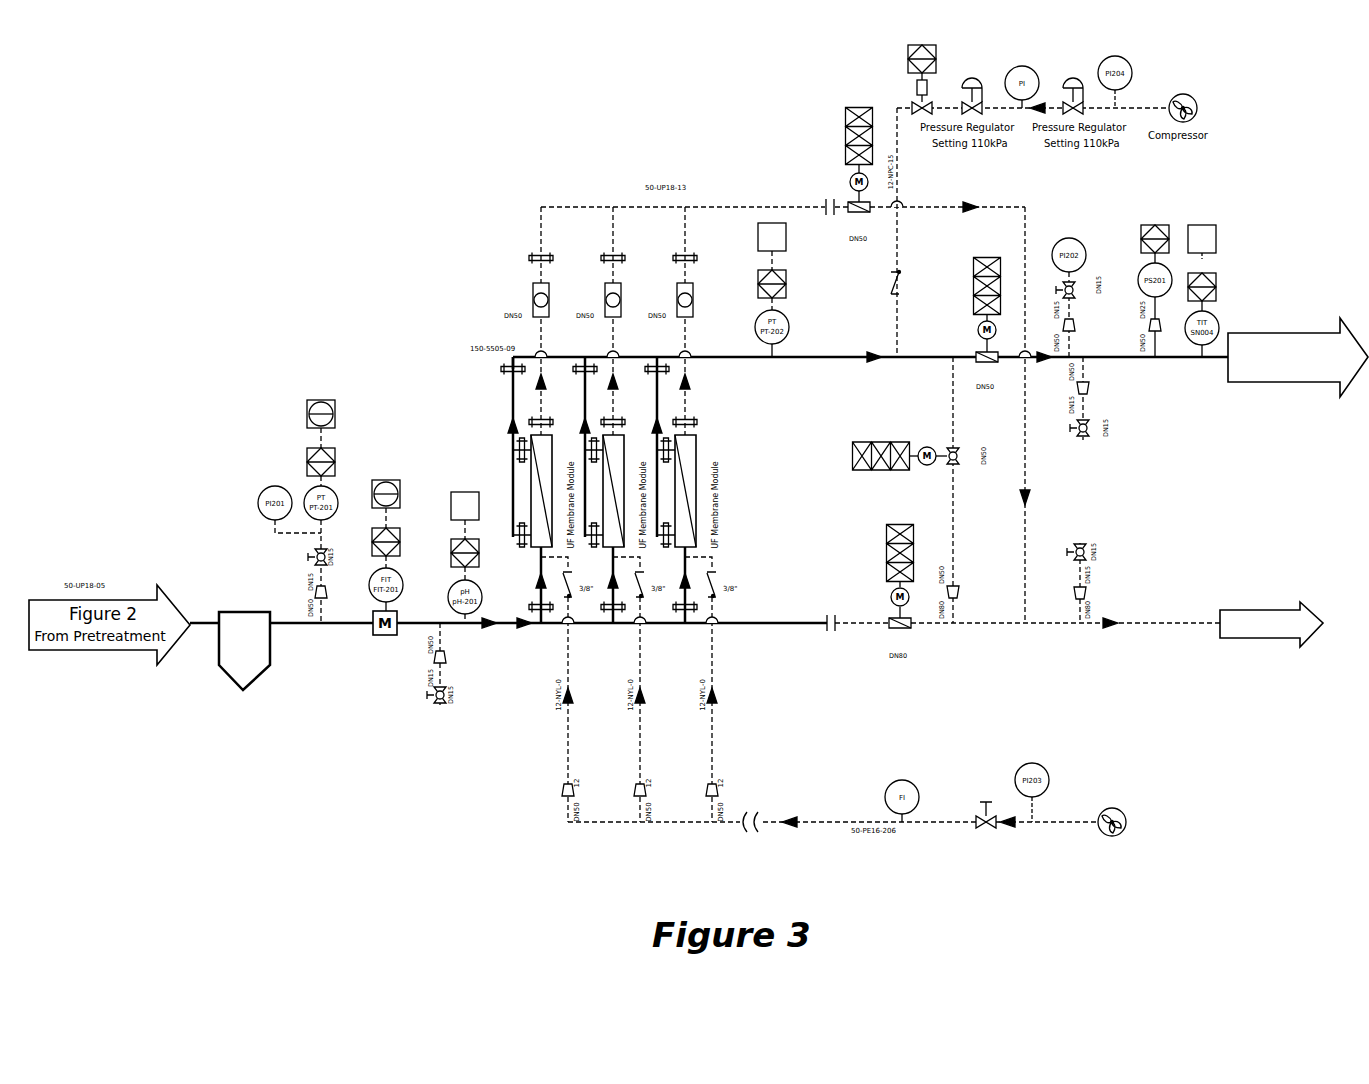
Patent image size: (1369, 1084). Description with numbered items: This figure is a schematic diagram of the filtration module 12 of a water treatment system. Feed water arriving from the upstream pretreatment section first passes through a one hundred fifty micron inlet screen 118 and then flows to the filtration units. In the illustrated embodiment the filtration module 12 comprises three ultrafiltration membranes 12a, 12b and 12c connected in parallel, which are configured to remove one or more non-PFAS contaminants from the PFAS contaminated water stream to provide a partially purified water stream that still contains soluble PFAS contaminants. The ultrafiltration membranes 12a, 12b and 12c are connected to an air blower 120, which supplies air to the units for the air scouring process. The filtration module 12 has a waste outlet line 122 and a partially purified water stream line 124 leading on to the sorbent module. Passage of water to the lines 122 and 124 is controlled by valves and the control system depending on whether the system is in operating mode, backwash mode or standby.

The filtration module 12 is at (535, 514).
The ultrafiltration membrane 12a is at (530, 487).
The ultrafiltration membrane 12b is at (586, 543).
The ultrafiltration membrane 12c is at (696, 450).
The inlet screen 118 is at (237, 612).
The air blower 120 is at (1125, 812).
The waste outlet line 122 is at (1250, 610).
The partially purified water stream line 124 is at (1213, 357).